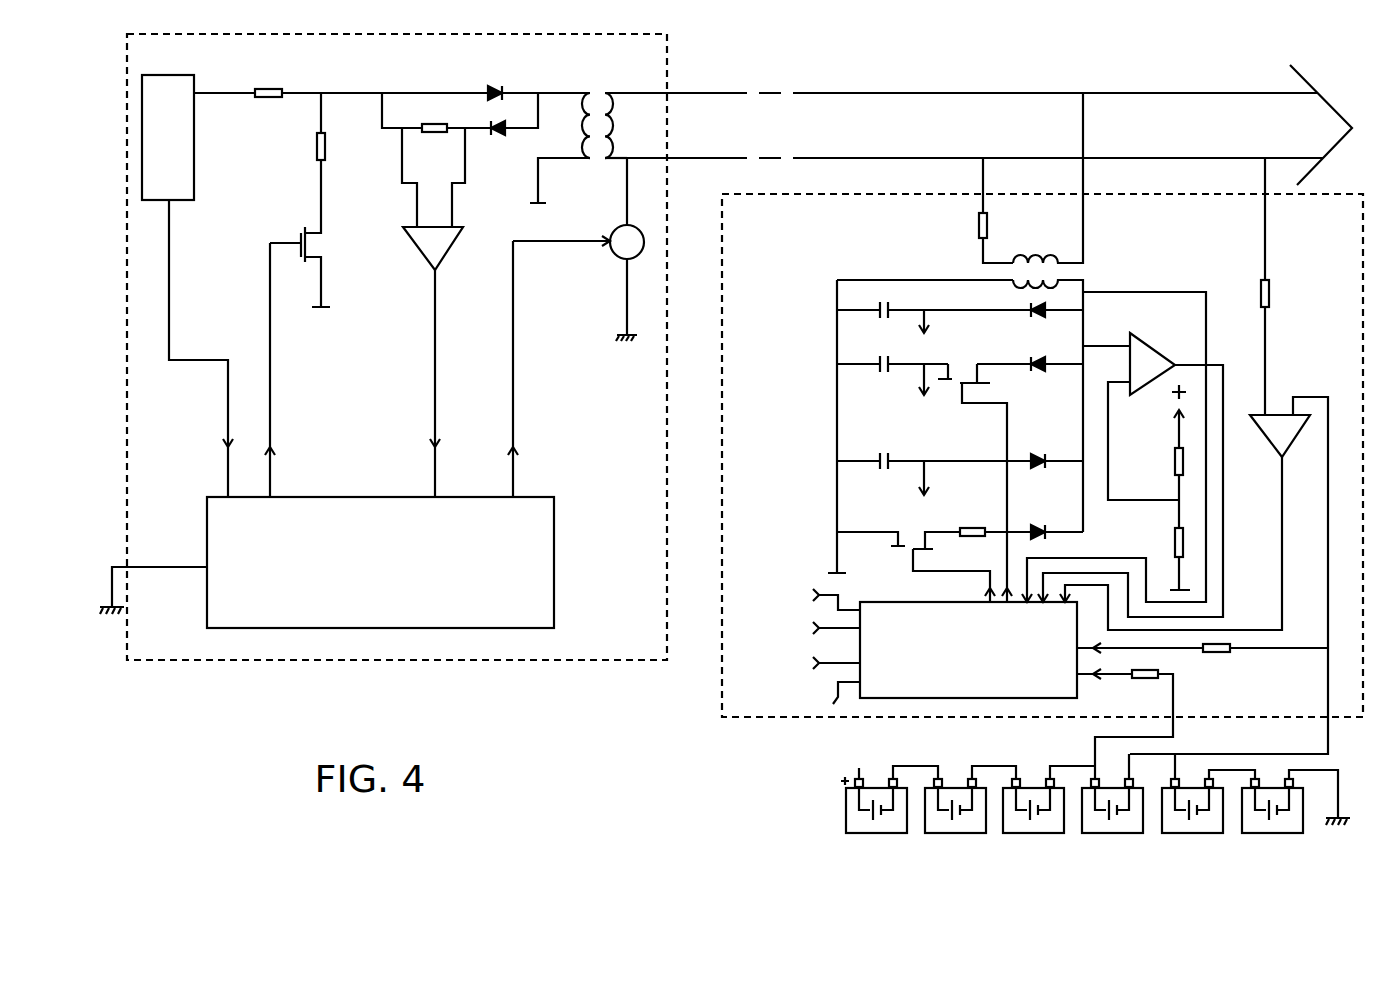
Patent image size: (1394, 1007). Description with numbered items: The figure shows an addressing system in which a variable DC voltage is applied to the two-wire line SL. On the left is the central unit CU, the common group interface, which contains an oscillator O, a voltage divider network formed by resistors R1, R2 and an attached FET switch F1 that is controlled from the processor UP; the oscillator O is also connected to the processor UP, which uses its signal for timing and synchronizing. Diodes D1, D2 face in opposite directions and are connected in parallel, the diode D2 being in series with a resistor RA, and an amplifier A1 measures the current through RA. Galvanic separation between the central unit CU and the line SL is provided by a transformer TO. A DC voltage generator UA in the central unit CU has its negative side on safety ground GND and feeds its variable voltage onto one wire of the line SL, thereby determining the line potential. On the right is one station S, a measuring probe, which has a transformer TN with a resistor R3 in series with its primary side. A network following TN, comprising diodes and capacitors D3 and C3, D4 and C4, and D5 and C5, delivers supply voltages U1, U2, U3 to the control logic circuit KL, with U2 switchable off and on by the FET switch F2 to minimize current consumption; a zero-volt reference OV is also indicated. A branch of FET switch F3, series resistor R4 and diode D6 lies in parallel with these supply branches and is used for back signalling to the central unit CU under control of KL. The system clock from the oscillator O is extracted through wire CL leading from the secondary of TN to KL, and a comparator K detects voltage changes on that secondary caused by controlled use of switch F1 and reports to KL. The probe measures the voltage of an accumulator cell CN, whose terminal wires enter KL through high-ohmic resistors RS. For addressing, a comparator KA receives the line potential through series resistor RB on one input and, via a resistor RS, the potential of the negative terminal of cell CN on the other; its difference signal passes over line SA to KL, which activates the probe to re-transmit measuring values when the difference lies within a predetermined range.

The central unit CU is at (397, 347).
The oscillator O is at (198, 286).
The voltage divider resistor R1 is at (369, 111).
The voltage divider resistor R2 is at (334, 163).
The FET switch F1 is at (293, 352).
The resistor RA is at (436, 160).
The diode D1 is at (530, 76).
The diode D2 is at (509, 135).
The amplifier A1 is at (424, 362).
The transformer TO is at (578, 127).
The DC voltage generator UA is at (576, 327).
The processor UP is at (327, 562).
The two-wire line SL is at (978, 125).
The station S is at (1042, 455).
The resistor R3 is at (971, 210).
The transformer TN is at (960, 312).
The capacitor C3 is at (929, 409).
The capacitor C4 is at (892, 381).
The capacitor C5 is at (934, 444).
The supply voltage U1 is at (942, 327).
The supply voltage U2 is at (928, 399).
The supply voltage U3 is at (943, 481).
The FET switch F2 is at (975, 467).
The FET switch F3 is at (916, 549).
The series resistor R4 is at (992, 549).
The diode D3 is at (1051, 327).
The diode D4 is at (1030, 381).
The diode D5 is at (1051, 444).
The diode D6 is at (1051, 515).
The zero volt reference OV is at (809, 625).
The comparator K is at (1130, 467).
The clock wire CL is at (1114, 431).
The line SA is at (1248, 483).
The series resistor RB is at (1286, 286).
The comparator KA is at (1194, 555).
The control logic circuit KL is at (918, 639).
The high-ohmic resistor RS is at (1202, 711).
The accumulator cell CN is at (1089, 815).
The ground GND is at (1343, 843).